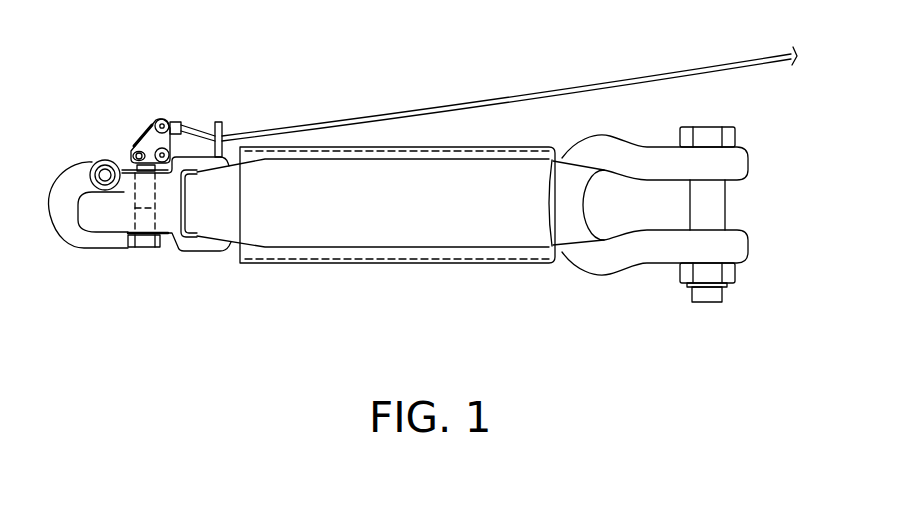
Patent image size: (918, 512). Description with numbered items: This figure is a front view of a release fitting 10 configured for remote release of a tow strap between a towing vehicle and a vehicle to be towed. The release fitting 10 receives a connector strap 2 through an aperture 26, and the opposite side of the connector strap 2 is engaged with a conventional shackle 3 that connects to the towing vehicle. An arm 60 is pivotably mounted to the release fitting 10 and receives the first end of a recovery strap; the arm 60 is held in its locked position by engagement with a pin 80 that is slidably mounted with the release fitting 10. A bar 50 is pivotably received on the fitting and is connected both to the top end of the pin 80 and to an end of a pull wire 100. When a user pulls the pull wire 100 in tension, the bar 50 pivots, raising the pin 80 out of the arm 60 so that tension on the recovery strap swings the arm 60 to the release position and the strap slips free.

The release fitting 10 is at (172, 254).
The connector strap 2 is at (455, 238).
The shackle 3 is at (662, 249).
The aperture 26 is at (187, 223).
The bar 50 is at (153, 142).
The arm 60 is at (88, 236).
The pin 80 is at (143, 220).
The pull wire 100 is at (580, 86).